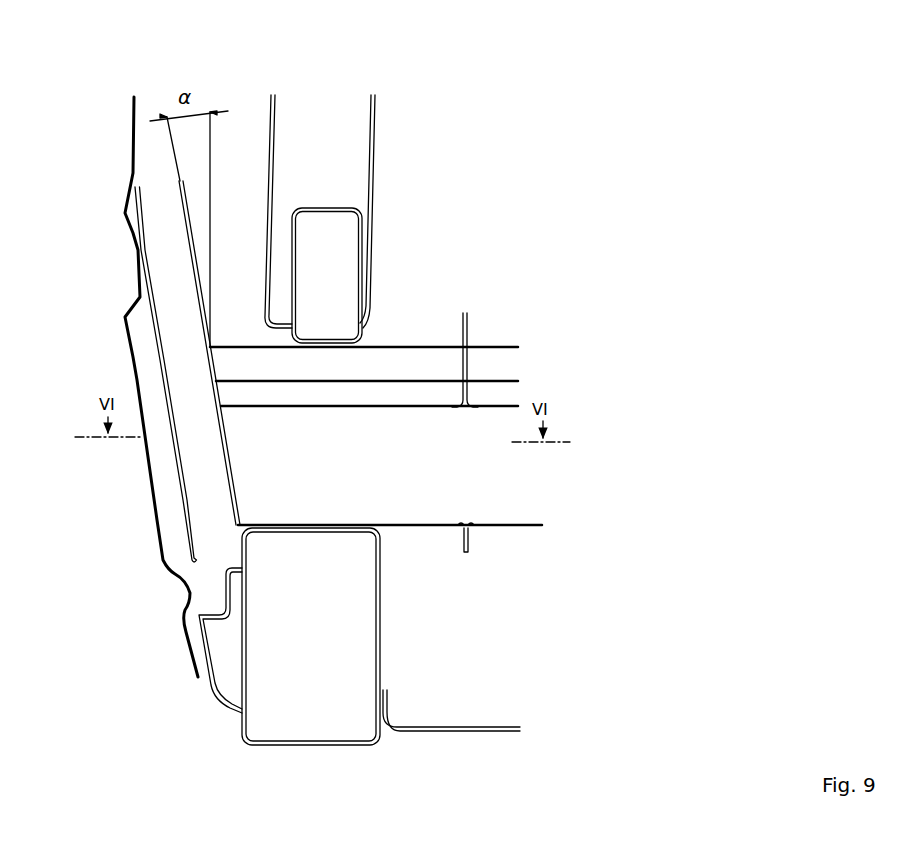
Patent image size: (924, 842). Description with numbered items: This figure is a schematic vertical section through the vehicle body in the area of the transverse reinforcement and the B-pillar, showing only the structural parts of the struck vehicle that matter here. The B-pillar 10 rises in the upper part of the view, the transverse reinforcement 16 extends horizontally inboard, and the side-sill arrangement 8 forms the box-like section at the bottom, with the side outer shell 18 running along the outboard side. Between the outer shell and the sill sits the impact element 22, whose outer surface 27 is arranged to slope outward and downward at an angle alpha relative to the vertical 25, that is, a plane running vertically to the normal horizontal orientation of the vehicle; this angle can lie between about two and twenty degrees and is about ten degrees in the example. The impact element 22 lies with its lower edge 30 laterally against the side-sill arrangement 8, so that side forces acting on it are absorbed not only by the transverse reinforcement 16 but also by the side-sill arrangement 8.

The side-sill arrangement 8 is at (305, 747).
The B-pillar 10 is at (392, 198).
The transverse reinforcement 16 is at (539, 526).
The side outer shell 18 is at (158, 535).
The impact element 22 is at (170, 428).
The vertical 25 is at (210, 168).
The outer surface 27 is at (152, 320).
The lower edge 30 is at (186, 557).